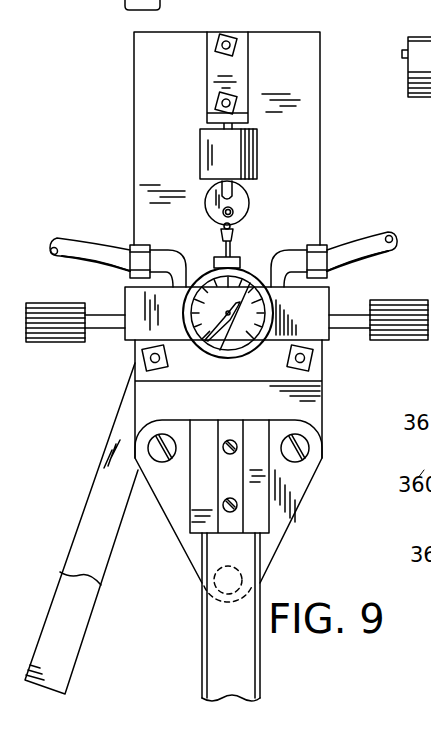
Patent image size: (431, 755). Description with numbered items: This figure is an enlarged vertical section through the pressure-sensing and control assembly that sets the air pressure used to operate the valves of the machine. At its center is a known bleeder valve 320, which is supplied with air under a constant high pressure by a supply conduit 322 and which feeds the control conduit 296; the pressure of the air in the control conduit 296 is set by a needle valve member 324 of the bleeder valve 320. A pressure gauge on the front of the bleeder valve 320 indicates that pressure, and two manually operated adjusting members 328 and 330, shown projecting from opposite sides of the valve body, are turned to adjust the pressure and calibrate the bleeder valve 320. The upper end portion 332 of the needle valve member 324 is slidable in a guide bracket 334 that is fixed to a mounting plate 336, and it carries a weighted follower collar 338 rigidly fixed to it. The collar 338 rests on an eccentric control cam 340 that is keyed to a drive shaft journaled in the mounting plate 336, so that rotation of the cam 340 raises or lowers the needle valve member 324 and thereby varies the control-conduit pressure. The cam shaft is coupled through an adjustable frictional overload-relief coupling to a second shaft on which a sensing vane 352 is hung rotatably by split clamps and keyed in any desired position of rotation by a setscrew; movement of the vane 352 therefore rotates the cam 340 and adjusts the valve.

The bleeder valve 320 is at (332, 348).
The supply conduit 322 is at (368, 245).
The needle valve member 324 is at (232, 255).
The control conduit 296 is at (71, 248).
The adjusting member 328 is at (60, 343).
The adjusting member 330 is at (402, 300).
The upper end portion 332 is at (222, 113).
The guide bracket 334 is at (241, 62).
The mounting plate 336 is at (311, 52).
The weighted follower collar 338 is at (258, 155).
The eccentric control cam 340 is at (249, 196).
The sensing vane 352 is at (68, 629).